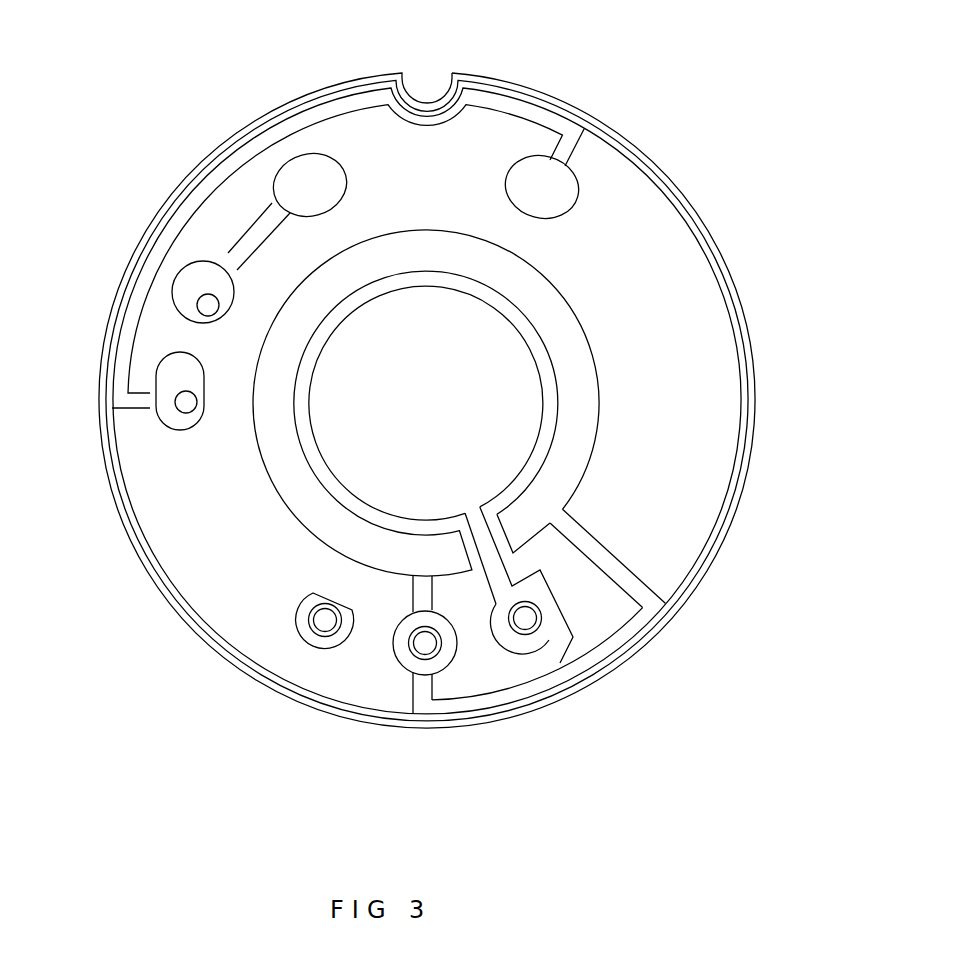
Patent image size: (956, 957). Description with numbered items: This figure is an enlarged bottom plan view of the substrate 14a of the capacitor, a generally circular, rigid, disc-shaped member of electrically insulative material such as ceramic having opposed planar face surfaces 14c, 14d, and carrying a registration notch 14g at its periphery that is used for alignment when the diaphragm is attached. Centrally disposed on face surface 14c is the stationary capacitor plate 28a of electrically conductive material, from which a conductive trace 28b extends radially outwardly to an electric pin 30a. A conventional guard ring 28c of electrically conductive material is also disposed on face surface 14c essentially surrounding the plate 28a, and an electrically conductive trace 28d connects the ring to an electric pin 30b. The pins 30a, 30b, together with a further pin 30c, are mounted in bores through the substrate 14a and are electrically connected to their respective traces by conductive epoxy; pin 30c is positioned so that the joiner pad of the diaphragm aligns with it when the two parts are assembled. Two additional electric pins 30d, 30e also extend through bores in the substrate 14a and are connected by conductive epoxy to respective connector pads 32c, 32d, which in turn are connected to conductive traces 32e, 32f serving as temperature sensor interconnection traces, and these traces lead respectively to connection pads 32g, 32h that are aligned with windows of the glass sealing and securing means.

The substrate 14a is at (755, 432).
The face surface 14c is at (715, 328).
The face surface 14d is at (720, 252).
The registration notch 14g is at (410, 90).
The stationary capacitor plate 28a is at (458, 452).
The conductive trace 28b is at (485, 548).
The guard ring 28c is at (557, 330).
The conductive trace 28d is at (617, 578).
The electric pin 30a is at (528, 620).
The electric pin 30b is at (423, 648).
The electric pin 30c is at (320, 626).
The electric pin 30d is at (187, 402).
The electric pin 30e is at (208, 305).
The connector pad 32c is at (165, 418).
The connector pad 32d is at (190, 317).
The conductive trace 32e is at (233, 165).
The conductive trace 32f is at (255, 237).
The connection pad 32g is at (558, 193).
The connection pad 32h is at (310, 172).